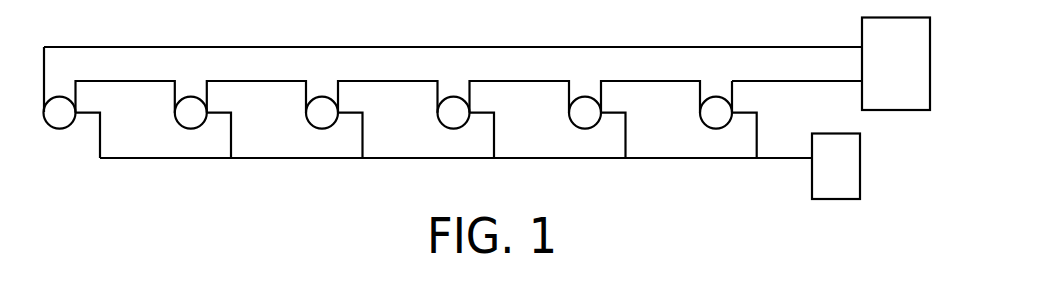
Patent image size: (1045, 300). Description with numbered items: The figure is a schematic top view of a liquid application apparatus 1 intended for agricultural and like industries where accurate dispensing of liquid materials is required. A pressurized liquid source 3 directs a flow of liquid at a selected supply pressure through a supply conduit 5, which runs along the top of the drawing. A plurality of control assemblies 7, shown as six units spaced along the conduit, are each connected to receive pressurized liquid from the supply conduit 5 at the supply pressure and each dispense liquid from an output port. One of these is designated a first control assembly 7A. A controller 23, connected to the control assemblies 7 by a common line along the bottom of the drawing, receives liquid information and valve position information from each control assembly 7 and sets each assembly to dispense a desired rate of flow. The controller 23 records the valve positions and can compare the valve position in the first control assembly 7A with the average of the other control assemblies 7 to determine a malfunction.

The liquid application apparatus 1 is at (493, 130).
The pressurized liquid source 3 is at (900, 110).
The supply conduit 5 is at (753, 46).
The control assembly 7 is at (193, 129).
The first control assembly 7A is at (323, 129).
The controller 23 is at (839, 199).